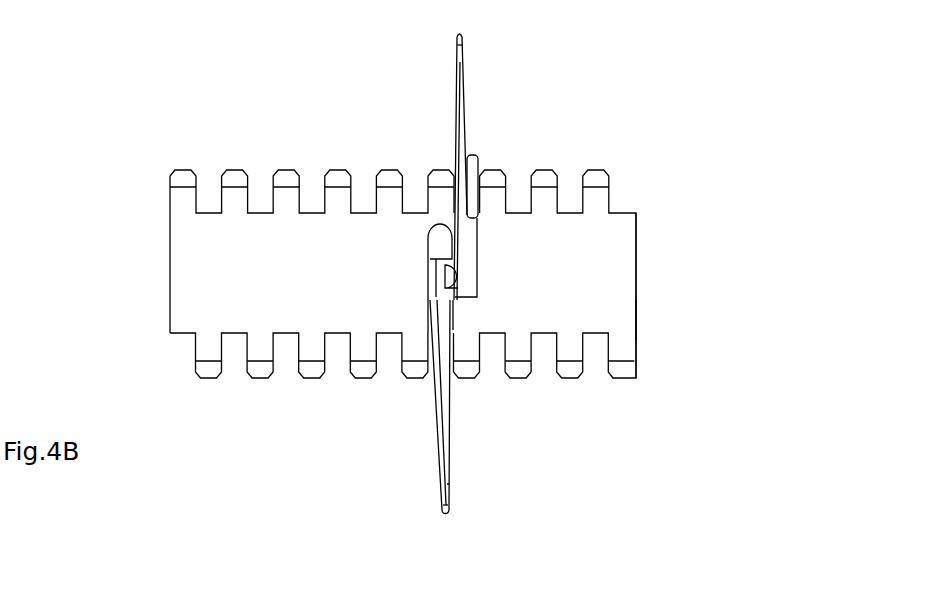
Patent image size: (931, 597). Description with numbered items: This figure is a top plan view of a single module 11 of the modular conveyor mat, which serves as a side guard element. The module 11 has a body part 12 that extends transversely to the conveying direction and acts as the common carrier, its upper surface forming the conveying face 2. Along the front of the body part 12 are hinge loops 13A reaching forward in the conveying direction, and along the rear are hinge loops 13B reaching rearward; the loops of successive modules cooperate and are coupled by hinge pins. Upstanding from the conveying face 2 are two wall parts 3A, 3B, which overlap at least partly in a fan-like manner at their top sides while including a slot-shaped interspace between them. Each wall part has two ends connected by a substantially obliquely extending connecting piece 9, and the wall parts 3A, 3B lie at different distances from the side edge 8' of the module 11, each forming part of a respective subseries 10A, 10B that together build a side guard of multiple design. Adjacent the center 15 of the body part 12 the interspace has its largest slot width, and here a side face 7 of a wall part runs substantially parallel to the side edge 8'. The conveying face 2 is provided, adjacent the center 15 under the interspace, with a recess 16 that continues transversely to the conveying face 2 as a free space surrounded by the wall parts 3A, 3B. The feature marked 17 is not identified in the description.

The conveying face 2 is at (183, 231).
The wall part 3A is at (462, 110).
The wall part 3B is at (440, 445).
The side face 7 is at (448, 484).
The side edge 8' is at (688, 320).
The connecting piece 9 is at (464, 140).
The subseries 10A is at (455, 48).
The subseries 10B is at (438, 497).
The module 11 is at (120, 128).
The body part 12 is at (572, 242).
The hinge loops 13A is at (260, 353).
The hinge loops 13B is at (286, 200).
The center 15 is at (494, 282).
The recess 16 is at (459, 288).
The projection 17 is at (448, 252).